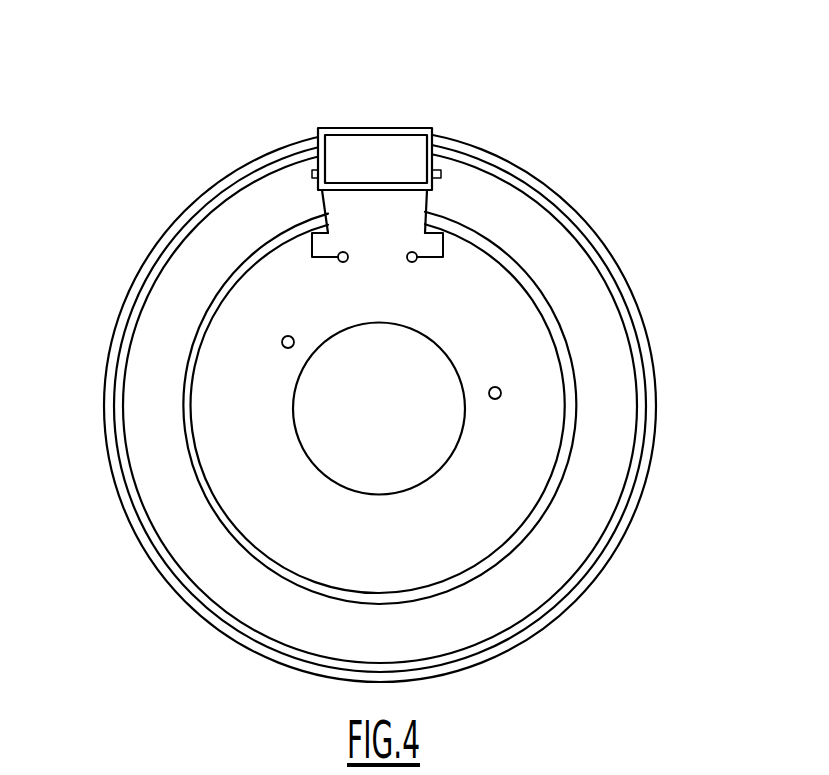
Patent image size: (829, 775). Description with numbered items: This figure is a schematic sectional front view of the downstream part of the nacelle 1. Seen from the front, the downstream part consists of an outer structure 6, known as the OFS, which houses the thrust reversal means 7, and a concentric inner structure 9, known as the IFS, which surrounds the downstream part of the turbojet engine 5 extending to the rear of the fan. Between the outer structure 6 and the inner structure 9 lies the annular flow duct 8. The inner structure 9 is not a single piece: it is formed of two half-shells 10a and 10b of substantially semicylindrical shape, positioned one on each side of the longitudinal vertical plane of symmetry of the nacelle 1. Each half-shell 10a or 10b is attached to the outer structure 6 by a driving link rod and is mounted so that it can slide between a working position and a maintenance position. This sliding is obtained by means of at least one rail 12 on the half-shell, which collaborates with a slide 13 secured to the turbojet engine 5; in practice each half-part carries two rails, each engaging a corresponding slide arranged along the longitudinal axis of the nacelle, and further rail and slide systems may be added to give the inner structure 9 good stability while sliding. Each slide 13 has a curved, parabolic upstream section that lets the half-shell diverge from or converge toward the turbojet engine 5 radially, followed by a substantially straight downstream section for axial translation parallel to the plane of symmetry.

The nacelle 1 is at (618, 177).
The turbojet engine 5 is at (432, 435).
The outer structure 6 is at (525, 168).
The thrust reversal means 7 is at (238, 177).
The annular flow duct 8 is at (163, 363).
The inner structure 9 is at (383, 408).
The half-shell 10a is at (185, 445).
The half-shell 10b is at (525, 530).
The rail 12 is at (340, 259).
The slide 13 is at (347, 267).